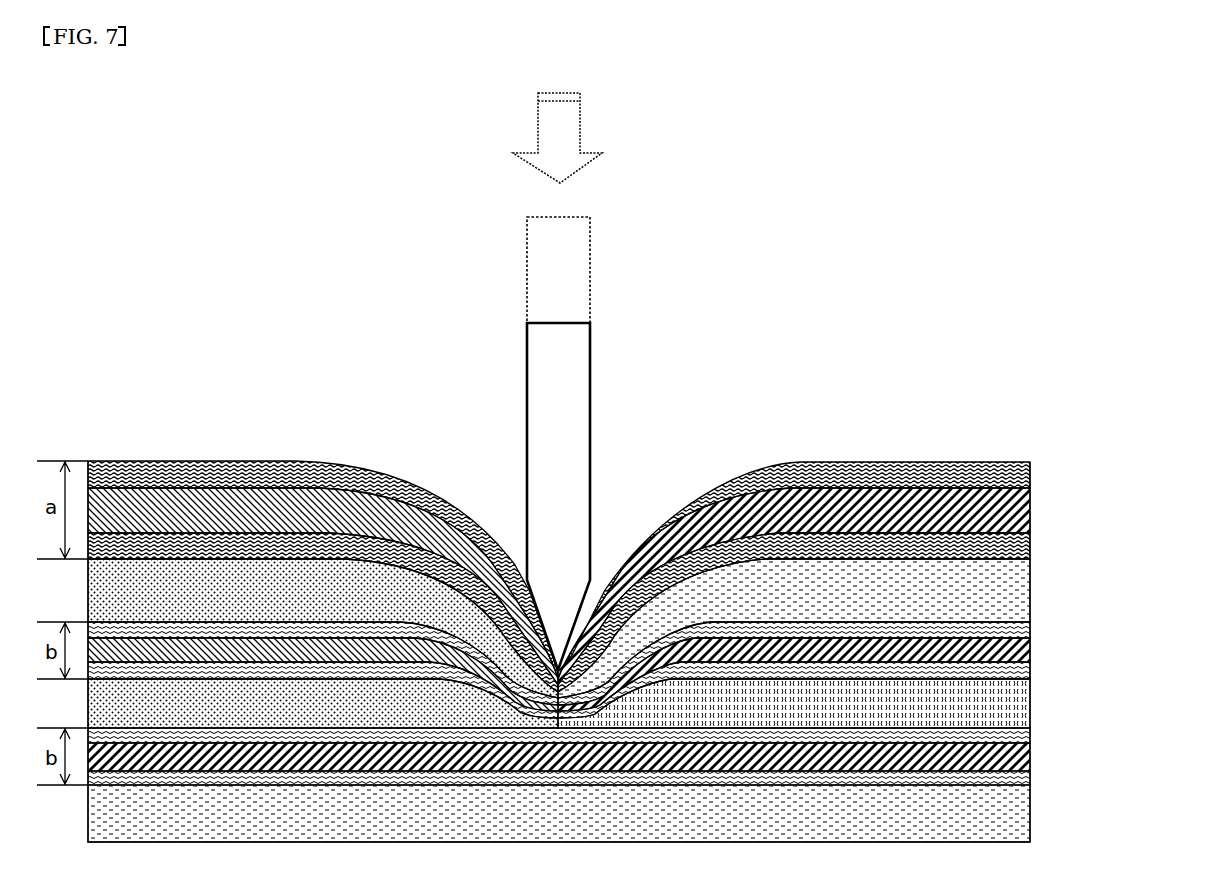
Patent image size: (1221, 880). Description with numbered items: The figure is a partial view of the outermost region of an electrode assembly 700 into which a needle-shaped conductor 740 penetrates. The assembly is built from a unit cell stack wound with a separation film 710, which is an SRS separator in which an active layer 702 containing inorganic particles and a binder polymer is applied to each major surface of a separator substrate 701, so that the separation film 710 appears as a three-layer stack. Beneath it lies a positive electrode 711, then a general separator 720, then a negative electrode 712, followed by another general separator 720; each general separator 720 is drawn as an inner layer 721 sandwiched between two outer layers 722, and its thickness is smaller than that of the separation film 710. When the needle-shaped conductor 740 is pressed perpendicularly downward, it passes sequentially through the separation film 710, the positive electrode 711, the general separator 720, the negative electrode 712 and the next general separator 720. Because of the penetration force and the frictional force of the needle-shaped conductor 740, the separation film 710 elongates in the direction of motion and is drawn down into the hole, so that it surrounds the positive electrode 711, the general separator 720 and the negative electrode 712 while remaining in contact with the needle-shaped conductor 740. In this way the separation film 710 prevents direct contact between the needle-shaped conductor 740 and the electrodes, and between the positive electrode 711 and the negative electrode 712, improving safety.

The input sensor 700 is at (120, 158).
The separation film 710 is at (652, 532).
The general separator 720 is at (652, 703).
The separator substrate 701 is at (1030, 508).
The active layer 702 is at (1017, 461).
The positive electrode 711 is at (1030, 590).
The negative electrode 712 is at (1030, 705).
The conductive layer 721 is at (1030, 650).
The insulating layer 722 is at (1030, 629).
The needle-shaped conductor 740 is at (623, 293).